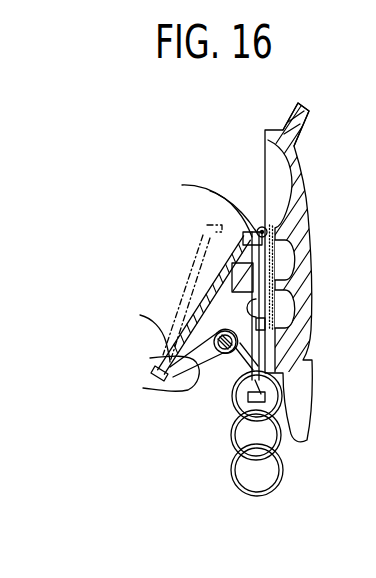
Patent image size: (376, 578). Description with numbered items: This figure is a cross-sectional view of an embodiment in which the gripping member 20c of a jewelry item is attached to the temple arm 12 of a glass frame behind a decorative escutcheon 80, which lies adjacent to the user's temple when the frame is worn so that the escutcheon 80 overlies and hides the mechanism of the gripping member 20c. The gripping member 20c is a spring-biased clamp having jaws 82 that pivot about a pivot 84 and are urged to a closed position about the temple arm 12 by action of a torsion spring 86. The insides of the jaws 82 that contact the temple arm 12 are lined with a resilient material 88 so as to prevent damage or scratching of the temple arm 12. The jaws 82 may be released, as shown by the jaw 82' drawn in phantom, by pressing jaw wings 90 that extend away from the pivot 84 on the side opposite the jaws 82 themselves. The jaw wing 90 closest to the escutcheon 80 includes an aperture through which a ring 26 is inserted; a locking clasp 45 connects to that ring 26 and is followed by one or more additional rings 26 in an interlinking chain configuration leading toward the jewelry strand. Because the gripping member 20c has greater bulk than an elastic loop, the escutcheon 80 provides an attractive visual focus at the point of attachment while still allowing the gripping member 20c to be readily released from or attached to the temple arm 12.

The decorative escutcheon 80 is at (304, 113).
The temple arm 12 is at (270, 272).
The resilient material 88 is at (310, 288).
The jaws 82 is at (211, 201).
The jaw in phantom 82' is at (141, 277).
The pivot 84 is at (199, 312).
The gripping member 20c is at (137, 328).
The jaw wings 90 is at (158, 366).
The torsion spring 86 is at (160, 386).
The ring 26 is at (232, 392).
The locking clasp 45 is at (231, 438).